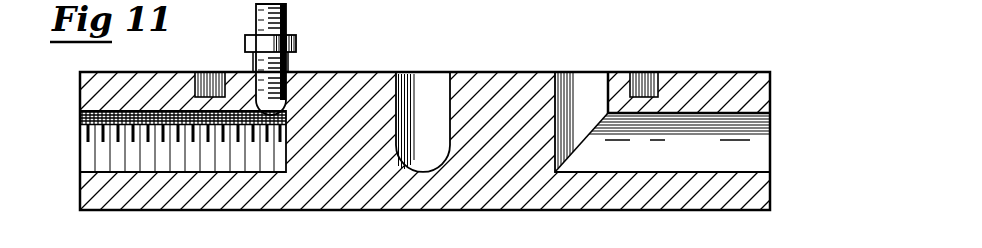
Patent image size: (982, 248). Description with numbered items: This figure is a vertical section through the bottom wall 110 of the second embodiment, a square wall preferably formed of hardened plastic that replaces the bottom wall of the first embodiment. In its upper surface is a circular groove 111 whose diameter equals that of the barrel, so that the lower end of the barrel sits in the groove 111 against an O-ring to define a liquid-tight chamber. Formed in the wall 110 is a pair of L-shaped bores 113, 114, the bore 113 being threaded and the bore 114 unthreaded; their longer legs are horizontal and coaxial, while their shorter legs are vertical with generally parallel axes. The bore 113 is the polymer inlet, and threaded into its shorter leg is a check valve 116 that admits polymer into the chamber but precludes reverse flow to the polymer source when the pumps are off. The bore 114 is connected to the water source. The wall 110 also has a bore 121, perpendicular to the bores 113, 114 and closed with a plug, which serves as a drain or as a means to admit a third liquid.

The bottom wall 110 is at (525, 72).
The circular groove 111 is at (210, 70).
The L-shaped bore 113 is at (92, 172).
The L-shaped bore 114 is at (760, 166).
The check valve 116 is at (290, 64).
The bore 121 is at (449, 80).